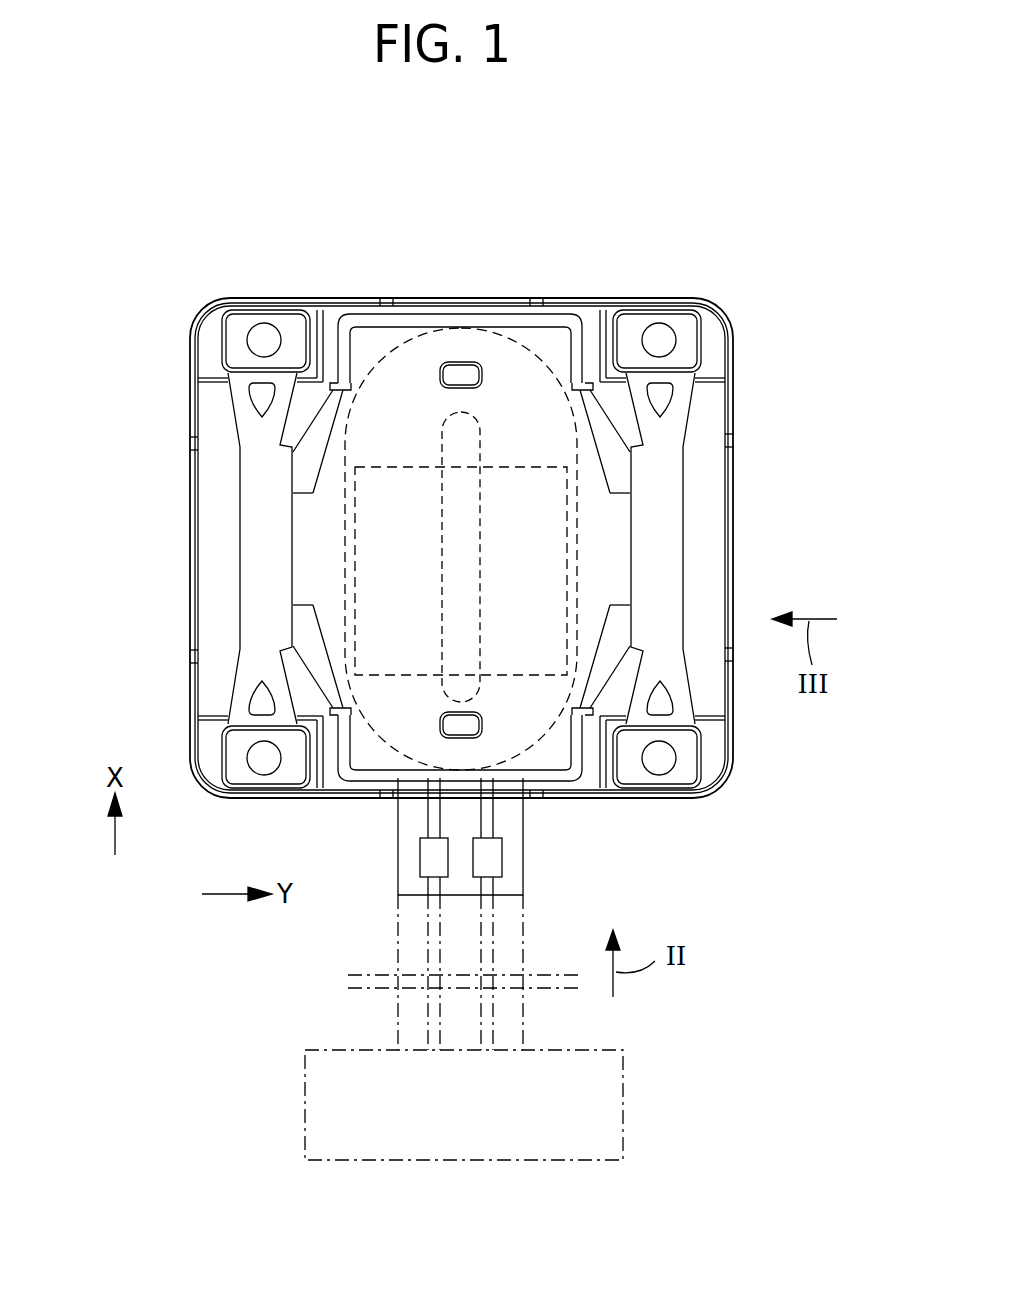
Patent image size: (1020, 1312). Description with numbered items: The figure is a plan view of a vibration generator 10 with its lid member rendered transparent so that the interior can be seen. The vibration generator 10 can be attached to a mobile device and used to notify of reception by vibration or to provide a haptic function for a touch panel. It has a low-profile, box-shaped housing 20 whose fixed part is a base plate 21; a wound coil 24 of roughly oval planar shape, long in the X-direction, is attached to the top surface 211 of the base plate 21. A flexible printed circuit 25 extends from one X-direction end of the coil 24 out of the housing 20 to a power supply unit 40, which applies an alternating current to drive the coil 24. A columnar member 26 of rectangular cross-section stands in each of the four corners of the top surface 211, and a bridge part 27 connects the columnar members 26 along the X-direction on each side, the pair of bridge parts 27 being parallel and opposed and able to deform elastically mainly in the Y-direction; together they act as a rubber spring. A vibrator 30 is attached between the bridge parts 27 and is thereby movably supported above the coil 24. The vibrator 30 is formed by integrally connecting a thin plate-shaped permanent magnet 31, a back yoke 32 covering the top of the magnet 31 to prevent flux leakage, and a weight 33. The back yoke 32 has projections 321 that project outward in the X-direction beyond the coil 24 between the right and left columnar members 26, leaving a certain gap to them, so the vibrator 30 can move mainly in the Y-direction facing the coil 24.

The vibration generator 10 is at (240, 975).
The housing 20 is at (180, 426).
The base plate 21 is at (417, 548).
The top surface 211 is at (207, 584).
The coil 24 is at (387, 353).
The flexible printed circuit 25 is at (518, 877).
The columnar member 26 is at (228, 326).
The bridge part 27 is at (243, 531).
The vibrator 30 is at (592, 312).
The magnet 31 is at (384, 464).
The back yoke 32 is at (603, 548).
The projection 321 is at (557, 336).
The weight 33 is at (317, 447).
The power supply unit 40 is at (612, 1130).